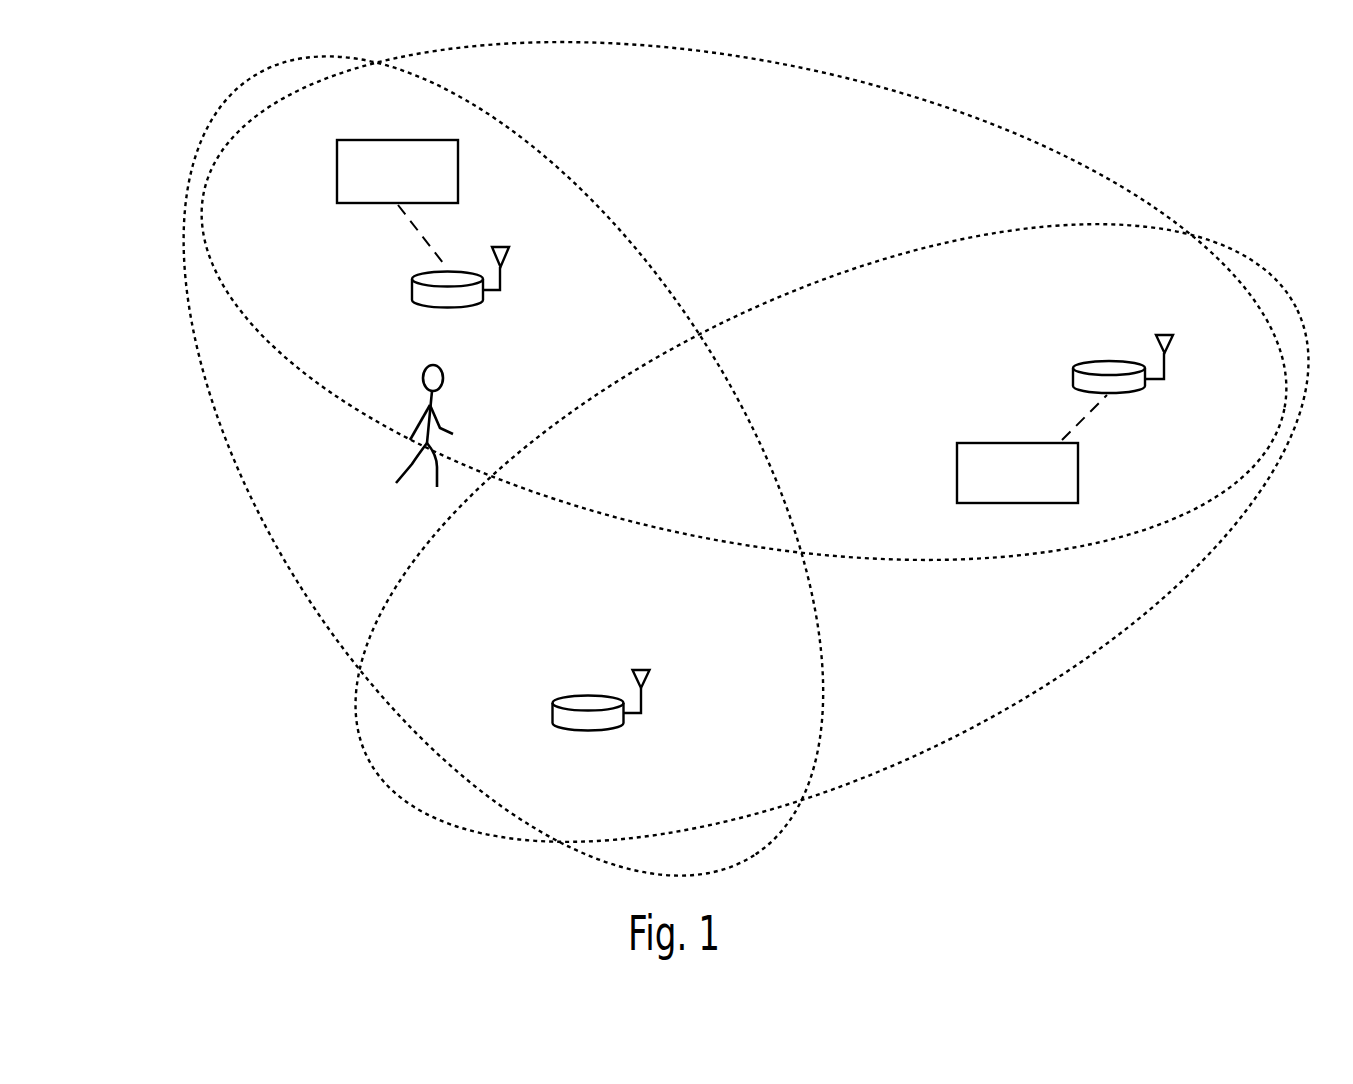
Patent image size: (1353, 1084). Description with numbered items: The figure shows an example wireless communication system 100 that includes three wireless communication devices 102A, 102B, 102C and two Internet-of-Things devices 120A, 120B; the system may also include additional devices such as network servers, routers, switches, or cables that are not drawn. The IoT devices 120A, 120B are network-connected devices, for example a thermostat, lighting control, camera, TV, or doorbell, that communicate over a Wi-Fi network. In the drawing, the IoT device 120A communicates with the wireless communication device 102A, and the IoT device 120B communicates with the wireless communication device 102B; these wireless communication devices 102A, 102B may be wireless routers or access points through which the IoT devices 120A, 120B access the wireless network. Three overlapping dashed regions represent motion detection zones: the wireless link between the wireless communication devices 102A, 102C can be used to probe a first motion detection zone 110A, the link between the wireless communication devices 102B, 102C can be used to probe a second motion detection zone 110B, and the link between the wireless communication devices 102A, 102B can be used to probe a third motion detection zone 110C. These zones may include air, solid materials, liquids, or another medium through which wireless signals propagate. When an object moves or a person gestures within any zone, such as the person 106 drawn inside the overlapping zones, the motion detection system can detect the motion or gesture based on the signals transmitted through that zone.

The wireless communication system 100 is at (184, 84).
The first motion detection zone 110A is at (186, 267).
The second motion detection zone 110B is at (893, 249).
The third motion detection zone 110C is at (1043, 148).
The wireless communication device 102A is at (414, 274).
The wireless communication device 102B is at (1077, 364).
The wireless communication device 102C is at (561, 697).
The IoT device 120A is at (390, 139).
The IoT device 120B is at (1014, 442).
The person 106 is at (410, 402).